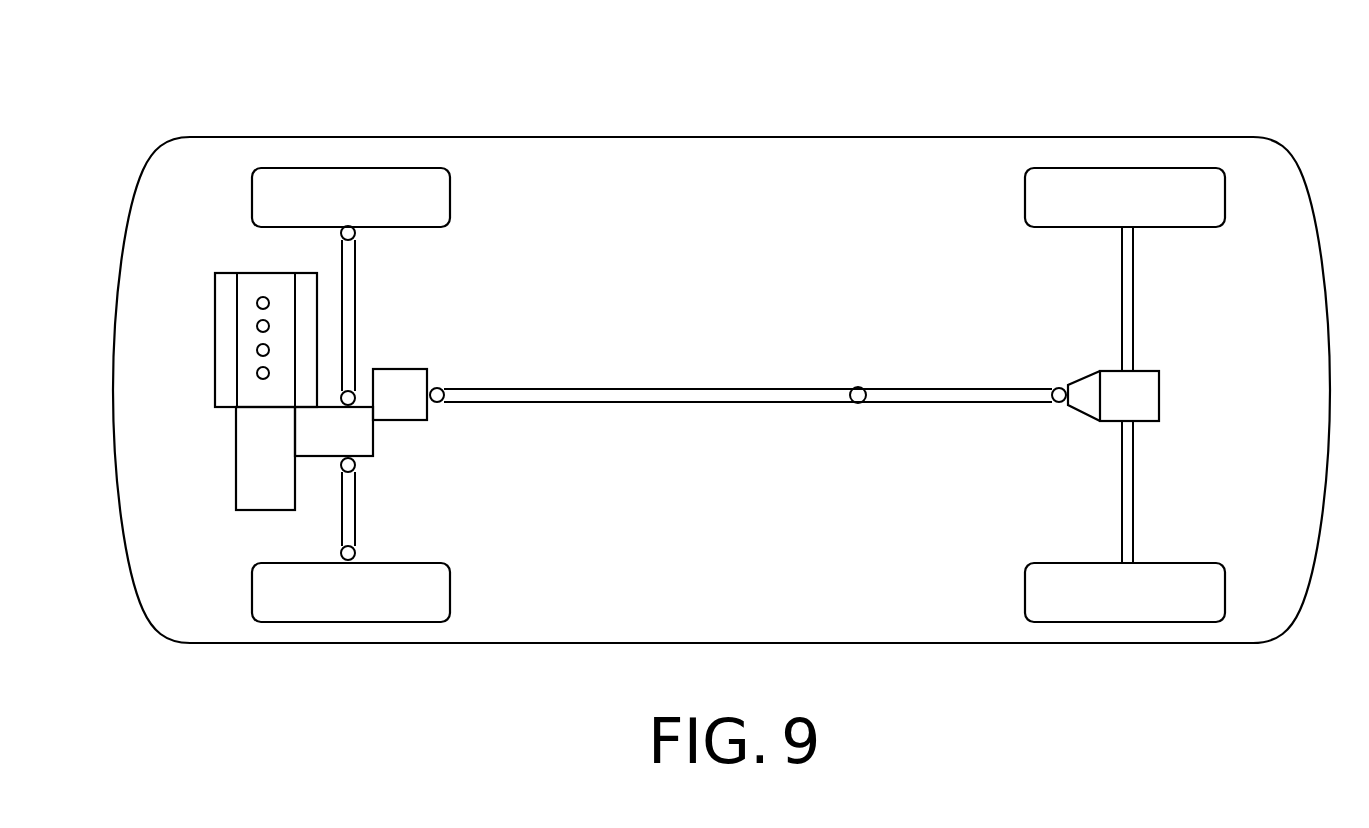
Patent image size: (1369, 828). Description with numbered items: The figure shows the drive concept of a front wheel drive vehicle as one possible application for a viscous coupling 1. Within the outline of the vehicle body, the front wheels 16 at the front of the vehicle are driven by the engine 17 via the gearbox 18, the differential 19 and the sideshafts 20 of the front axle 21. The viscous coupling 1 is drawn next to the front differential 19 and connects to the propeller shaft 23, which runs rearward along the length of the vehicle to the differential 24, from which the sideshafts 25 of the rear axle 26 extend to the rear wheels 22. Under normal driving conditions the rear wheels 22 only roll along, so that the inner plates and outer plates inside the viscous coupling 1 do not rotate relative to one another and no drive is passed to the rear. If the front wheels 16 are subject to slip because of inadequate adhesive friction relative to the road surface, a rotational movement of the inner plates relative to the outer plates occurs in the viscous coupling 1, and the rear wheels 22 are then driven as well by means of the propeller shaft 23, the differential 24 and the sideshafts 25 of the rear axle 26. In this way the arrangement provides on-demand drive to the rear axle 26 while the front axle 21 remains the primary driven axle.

The viscous coupling 1 is at (417, 378).
The front wheels 16 is at (343, 180).
The engine 17 is at (257, 283).
The gearbox 18 is at (255, 439).
The differential 19 is at (360, 437).
The sideshafts 20 is at (350, 247).
The front axle 21 is at (403, 312).
The rear wheels 22 is at (1119, 185).
The propeller shaft 23 is at (698, 393).
The differential 24 is at (1146, 395).
The sideshafts 25 is at (1125, 243).
The rear axle 26 is at (1075, 351).